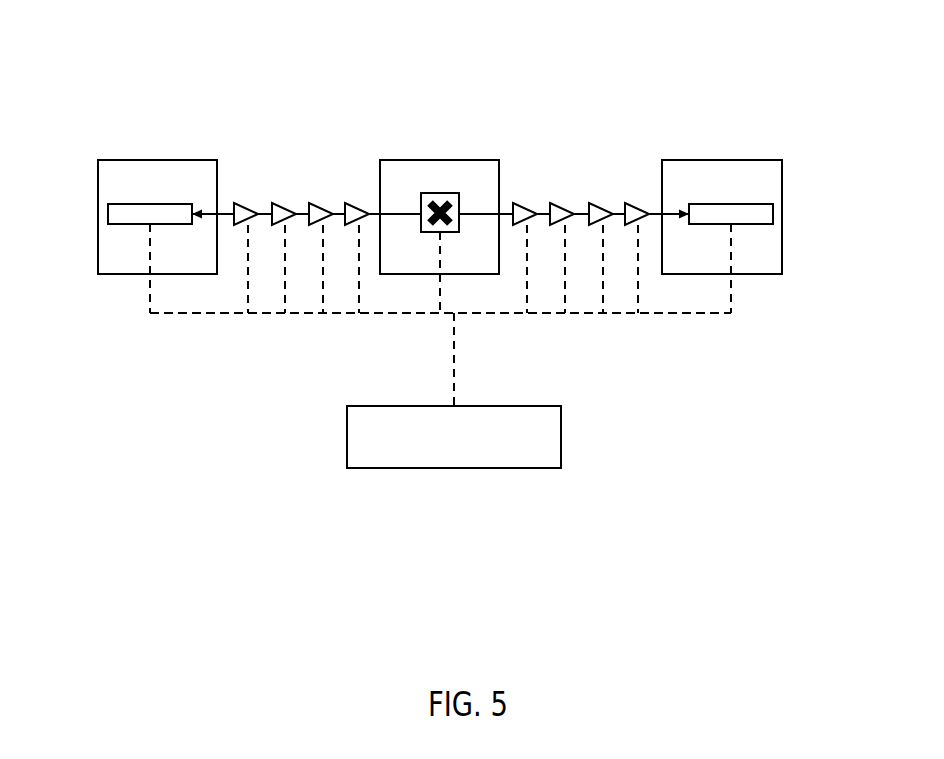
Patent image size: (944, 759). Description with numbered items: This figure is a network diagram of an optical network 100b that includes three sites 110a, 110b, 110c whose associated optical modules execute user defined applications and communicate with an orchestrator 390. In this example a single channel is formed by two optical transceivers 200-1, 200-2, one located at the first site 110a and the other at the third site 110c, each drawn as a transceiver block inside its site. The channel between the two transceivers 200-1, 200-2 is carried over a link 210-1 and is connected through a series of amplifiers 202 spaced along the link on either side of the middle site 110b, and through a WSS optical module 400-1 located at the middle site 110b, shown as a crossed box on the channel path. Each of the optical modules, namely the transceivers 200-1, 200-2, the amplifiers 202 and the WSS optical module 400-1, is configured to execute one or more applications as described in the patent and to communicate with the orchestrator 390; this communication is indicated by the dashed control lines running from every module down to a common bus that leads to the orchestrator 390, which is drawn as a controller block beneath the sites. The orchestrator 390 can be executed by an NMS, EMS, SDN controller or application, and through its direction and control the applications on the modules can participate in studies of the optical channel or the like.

The optical network 100b is at (527, 62).
The site 110a is at (162, 160).
The site 110b is at (472, 160).
The site 110c is at (733, 160).
The optical transceiver 200-1 is at (108, 214).
The optical transceiver 200-2 is at (773, 210).
The amplifiers 202 is at (248, 208).
The optical link 210-1 is at (397, 213).
The WSS optical module 400-1 is at (421, 226).
The orchestrator 390 is at (517, 406).